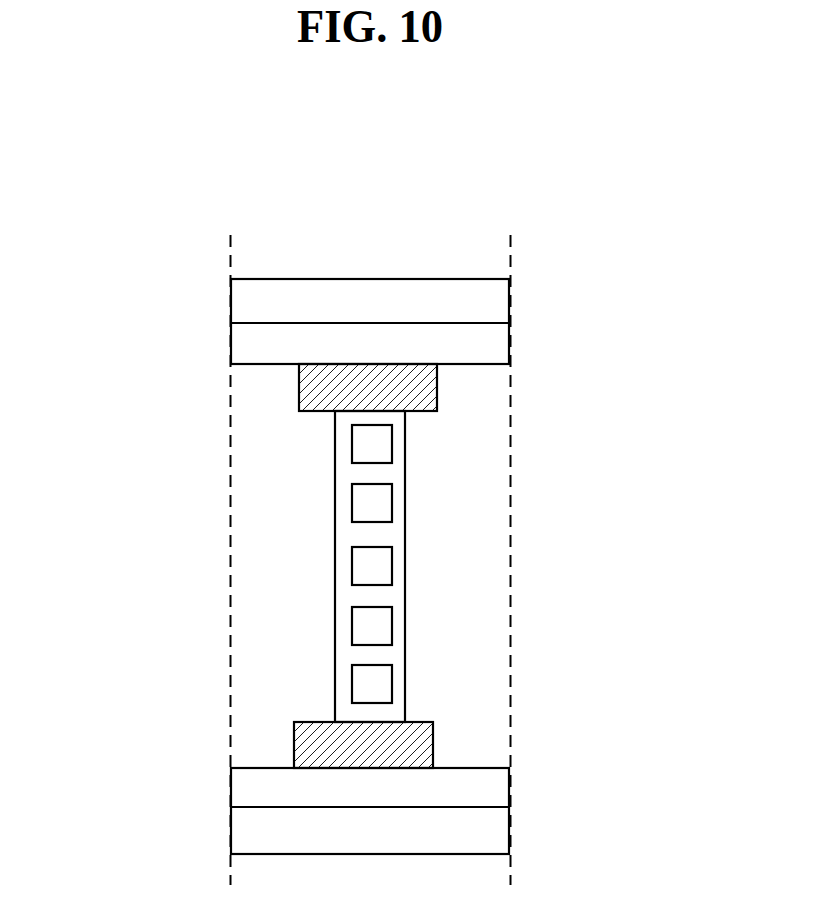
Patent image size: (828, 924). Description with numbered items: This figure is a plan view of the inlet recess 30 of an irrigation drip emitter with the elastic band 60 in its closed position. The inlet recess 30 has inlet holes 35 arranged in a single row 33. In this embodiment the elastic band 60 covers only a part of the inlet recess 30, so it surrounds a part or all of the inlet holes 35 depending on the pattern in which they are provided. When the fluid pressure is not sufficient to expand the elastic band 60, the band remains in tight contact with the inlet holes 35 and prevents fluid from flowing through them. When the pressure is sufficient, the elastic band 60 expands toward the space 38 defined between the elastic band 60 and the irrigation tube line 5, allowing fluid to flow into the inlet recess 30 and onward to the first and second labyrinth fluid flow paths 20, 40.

The irrigation tube line 5 is at (482, 837).
The first labyrinth fluid flow path 20 is at (71, 518).
The inlet recess 30 is at (375, 163).
The single row 33 is at (406, 510).
The inlet holes 35 is at (393, 612).
The space 38 is at (460, 342).
The second labyrinth fluid flow path 40 is at (683, 500).
The elastic band 60 is at (410, 745).